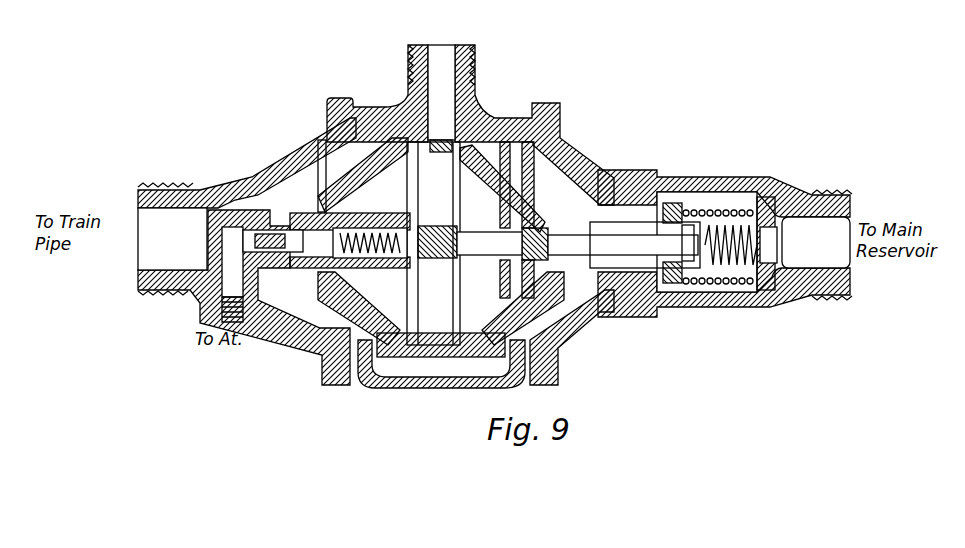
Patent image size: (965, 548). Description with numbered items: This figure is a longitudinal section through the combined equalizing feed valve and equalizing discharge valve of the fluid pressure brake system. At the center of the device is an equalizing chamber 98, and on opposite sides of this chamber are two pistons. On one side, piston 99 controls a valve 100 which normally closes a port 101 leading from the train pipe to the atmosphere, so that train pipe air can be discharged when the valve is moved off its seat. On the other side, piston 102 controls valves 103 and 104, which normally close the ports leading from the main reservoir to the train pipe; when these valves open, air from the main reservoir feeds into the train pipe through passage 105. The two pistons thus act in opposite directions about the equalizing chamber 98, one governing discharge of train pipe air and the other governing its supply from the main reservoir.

The equalizing chamber 98 is at (435, 170).
The piston 99 is at (340, 202).
The valve 100 is at (290, 237).
The port 101 is at (197, 293).
The piston 102 is at (487, 163).
The valve 103 is at (708, 210).
The valve 104 is at (670, 213).
The passage 105 is at (440, 365).